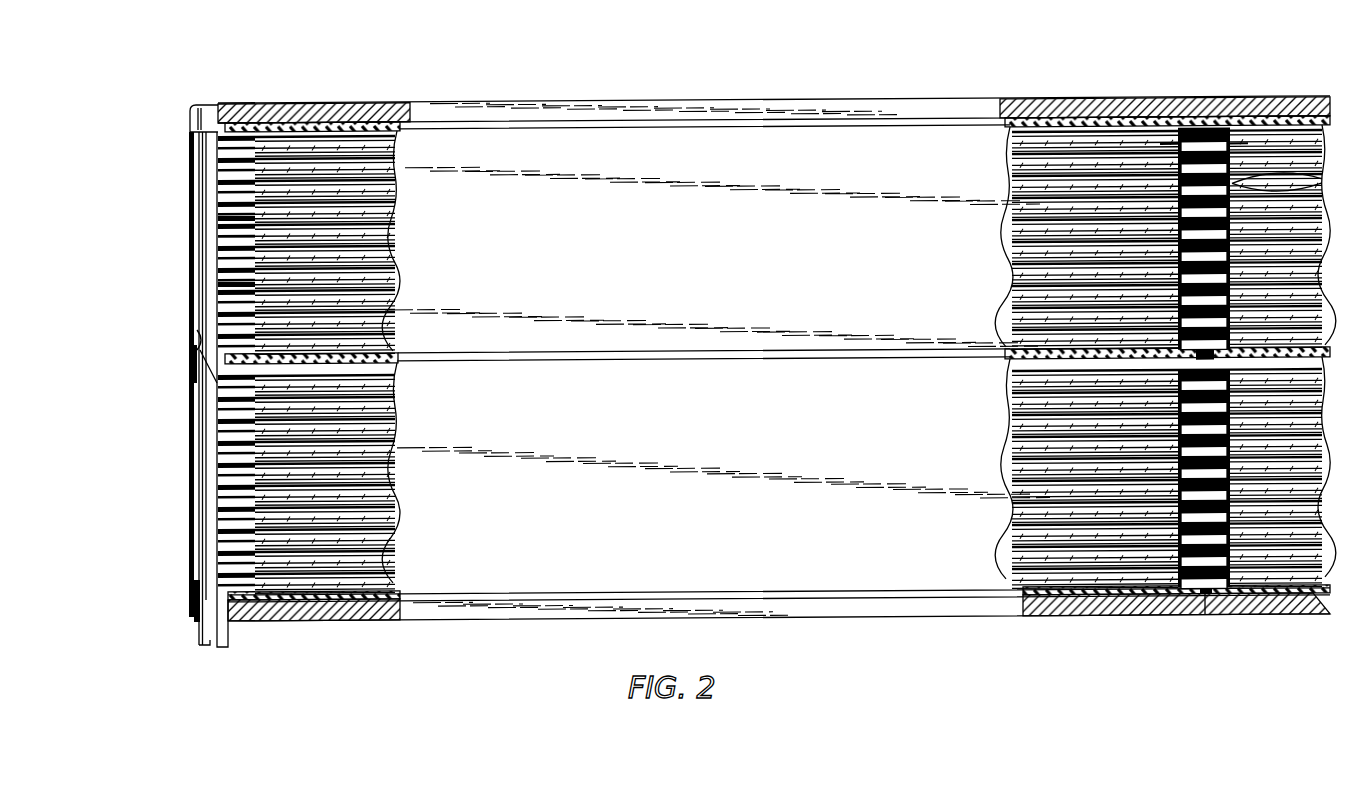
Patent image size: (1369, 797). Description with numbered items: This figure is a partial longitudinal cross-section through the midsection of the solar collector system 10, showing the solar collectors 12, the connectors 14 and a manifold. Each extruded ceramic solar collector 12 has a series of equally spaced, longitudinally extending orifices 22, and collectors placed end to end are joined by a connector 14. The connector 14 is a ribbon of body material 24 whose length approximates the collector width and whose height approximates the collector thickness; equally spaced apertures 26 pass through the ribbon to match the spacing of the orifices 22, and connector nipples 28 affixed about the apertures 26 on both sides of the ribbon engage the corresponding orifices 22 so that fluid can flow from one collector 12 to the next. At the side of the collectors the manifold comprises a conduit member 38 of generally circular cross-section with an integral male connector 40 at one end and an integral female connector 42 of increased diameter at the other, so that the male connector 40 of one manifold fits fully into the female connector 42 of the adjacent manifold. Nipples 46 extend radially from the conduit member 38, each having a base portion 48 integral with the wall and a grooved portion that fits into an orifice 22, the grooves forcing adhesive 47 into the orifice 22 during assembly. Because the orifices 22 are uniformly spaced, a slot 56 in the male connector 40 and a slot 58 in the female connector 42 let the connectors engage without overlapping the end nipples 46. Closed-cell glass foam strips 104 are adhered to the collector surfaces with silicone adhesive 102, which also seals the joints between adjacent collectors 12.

The solar collector system 10 is at (674, 50).
The solar collector 12 is at (732, 282).
The connector 14 is at (1153, 150).
The longitudinally extending orifice 22 is at (1063, 140).
The ribbon of body material 24 is at (1203, 118).
The aperture 26 is at (1078, 157).
The connector nipple 28 is at (1310, 183).
The conduit member 38 is at (201, 463).
The male connector 40 is at (199, 323).
The female connector 42 is at (194, 118).
The nipple 46 is at (222, 257).
The adhesive 47 is at (240, 217).
The base portion 48 is at (220, 306).
The slot 56 is at (204, 407).
The slot 58 is at (203, 103).
The silicone adhesive 102 is at (367, 123).
The closed-cell glass foam strip 104 is at (334, 110).